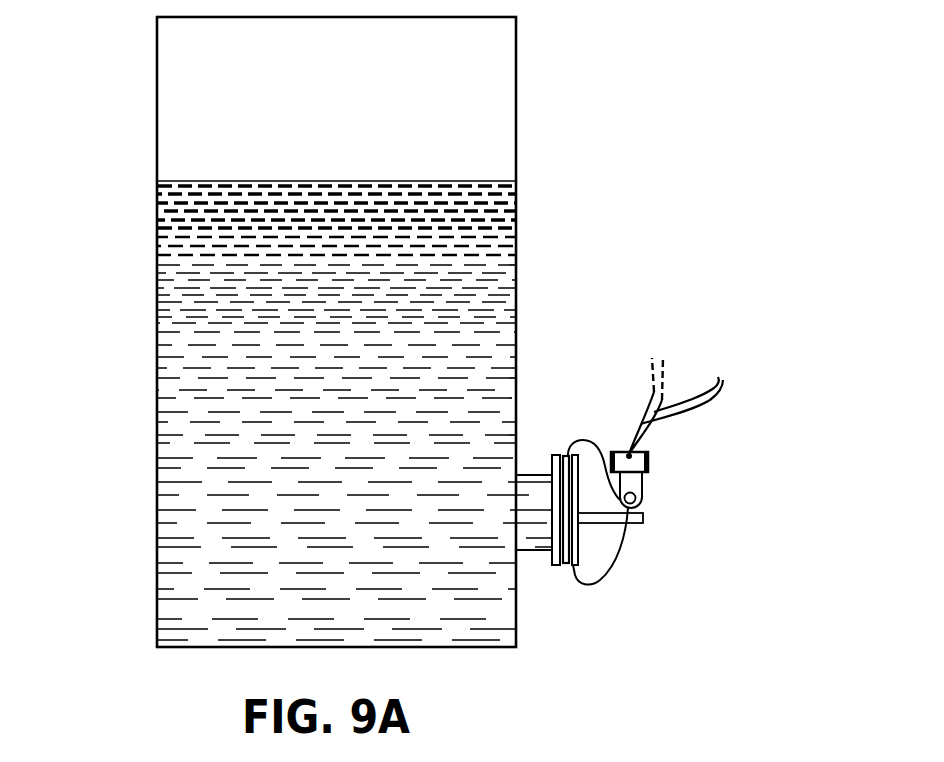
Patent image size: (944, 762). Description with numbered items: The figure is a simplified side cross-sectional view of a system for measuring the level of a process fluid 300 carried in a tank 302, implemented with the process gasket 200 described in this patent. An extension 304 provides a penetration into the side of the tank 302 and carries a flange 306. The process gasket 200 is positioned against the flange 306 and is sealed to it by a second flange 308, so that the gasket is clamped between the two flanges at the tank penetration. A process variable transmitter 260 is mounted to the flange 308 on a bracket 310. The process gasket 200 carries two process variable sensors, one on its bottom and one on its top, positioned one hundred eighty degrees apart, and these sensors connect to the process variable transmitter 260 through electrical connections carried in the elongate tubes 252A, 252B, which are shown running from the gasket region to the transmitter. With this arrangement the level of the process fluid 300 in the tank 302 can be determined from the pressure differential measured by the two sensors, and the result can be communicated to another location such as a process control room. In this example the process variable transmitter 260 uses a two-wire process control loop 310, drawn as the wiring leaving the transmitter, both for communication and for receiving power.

The process gasket 200 is at (570, 548).
The elongate tube 252A is at (599, 580).
The elongate tube 252B is at (594, 440).
The process variable transmitter 260 is at (648, 462).
The process fluid 300 is at (167, 384).
The tank 302 is at (516, 95).
The extension 304 is at (532, 475).
The flange 306 is at (553, 567).
The flange 308 is at (567, 565).
The bracket / two-wire process control loop 310 is at (700, 545).